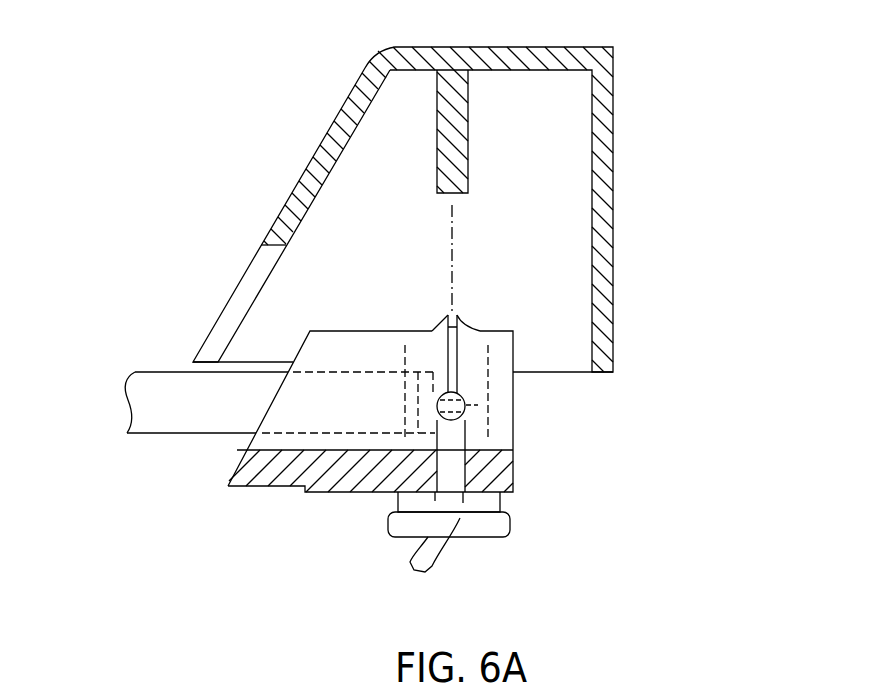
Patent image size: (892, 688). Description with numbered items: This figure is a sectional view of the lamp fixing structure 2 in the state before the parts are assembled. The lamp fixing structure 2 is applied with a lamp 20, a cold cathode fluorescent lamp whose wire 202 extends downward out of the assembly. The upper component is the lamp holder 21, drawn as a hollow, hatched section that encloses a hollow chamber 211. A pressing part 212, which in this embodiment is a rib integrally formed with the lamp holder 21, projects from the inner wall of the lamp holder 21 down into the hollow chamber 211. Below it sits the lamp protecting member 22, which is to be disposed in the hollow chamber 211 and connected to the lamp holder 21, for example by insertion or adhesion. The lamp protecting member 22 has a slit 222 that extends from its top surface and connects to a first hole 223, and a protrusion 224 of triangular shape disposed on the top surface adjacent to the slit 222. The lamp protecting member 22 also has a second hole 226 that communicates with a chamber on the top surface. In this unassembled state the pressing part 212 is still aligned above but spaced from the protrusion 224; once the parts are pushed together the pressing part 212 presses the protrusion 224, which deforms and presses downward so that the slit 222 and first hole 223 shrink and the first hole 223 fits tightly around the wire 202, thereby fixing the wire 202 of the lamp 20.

The lamp fixing structure 2 is at (68, 55).
The lamp 20 is at (153, 423).
The wire 202 is at (430, 562).
The lamp holder 21 is at (600, 150).
The hollow chamber 211 is at (552, 223).
The pressing part 212 is at (457, 97).
The lamp protecting member 22 is at (514, 402).
The slit 222 is at (462, 345).
The first hole 223 is at (468, 418).
The protrusion 224 is at (432, 328).
The second hole 226 is at (245, 285).